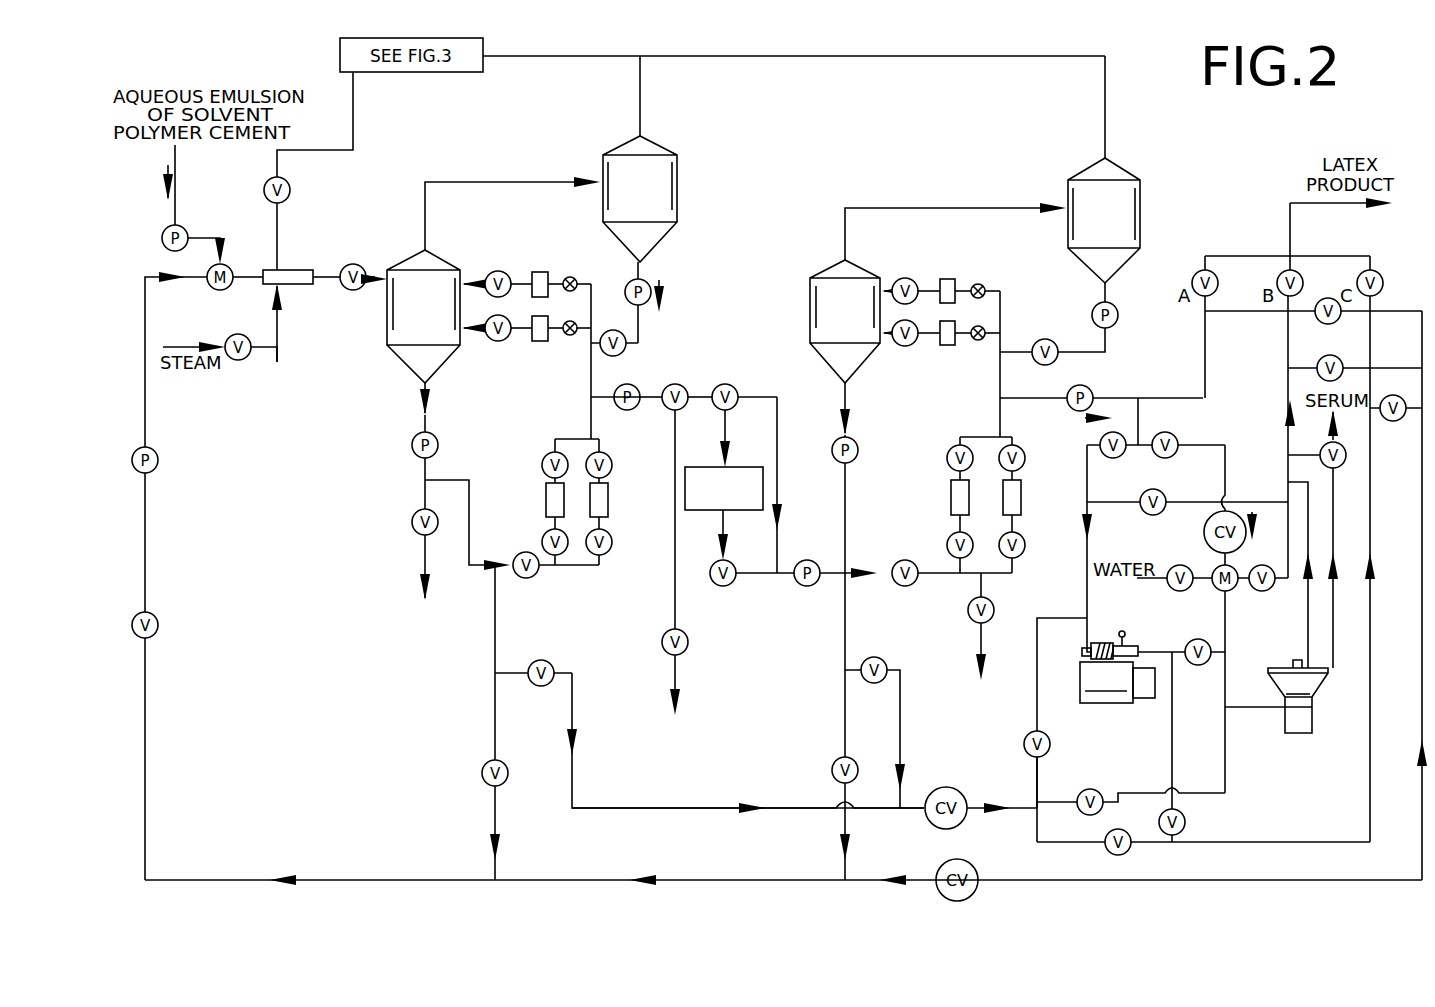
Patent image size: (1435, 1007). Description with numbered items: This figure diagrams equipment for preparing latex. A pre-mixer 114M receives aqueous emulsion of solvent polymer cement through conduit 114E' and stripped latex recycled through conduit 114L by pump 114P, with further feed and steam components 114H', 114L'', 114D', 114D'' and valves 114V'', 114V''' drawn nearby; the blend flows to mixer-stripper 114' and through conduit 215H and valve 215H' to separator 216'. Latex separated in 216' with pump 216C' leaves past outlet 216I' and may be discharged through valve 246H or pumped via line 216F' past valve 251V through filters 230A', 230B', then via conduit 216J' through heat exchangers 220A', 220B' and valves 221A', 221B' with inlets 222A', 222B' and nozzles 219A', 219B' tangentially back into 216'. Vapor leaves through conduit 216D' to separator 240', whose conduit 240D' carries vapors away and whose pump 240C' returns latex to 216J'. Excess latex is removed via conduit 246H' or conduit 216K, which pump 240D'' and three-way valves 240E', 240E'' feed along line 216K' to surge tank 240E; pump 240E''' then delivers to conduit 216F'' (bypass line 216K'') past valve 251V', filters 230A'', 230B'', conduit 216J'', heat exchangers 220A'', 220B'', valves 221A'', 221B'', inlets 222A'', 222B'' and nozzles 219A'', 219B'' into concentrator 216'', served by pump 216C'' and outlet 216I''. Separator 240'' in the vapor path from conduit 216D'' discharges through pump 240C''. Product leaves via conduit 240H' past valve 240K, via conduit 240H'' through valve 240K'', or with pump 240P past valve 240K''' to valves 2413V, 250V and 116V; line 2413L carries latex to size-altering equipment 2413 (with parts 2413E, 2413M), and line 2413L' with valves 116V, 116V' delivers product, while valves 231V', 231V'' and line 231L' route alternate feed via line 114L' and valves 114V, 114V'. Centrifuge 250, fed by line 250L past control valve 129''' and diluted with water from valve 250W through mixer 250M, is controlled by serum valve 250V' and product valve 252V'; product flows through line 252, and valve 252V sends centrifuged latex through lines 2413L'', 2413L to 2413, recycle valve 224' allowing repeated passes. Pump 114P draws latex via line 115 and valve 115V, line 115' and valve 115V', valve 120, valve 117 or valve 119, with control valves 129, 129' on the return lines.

The conduit 114L is at (178, 576).
The line 114L' is at (852, 476).
The valve 114L'' is at (308, 223).
The mixer-stripper 114' is at (301, 260).
The pump 114H' is at (201, 198).
The conduit 114E' is at (218, 235).
The pre-mixer 114M is at (232, 286).
The steam valve 114D' is at (268, 358).
The steam line 114D'' is at (195, 334).
The pump 114P is at (173, 453).
The valve 114V is at (552, 664).
The valve 114V' is at (895, 726).
The valve 114V'' is at (1203, 851).
The valve 114V''' is at (177, 616).
The line 115 is at (465, 722).
The line 115' is at (813, 671).
The valve 115V is at (465, 764).
The valve 115V' is at (807, 770).
The valve 116V is at (1200, 747).
The valve 116V' is at (1371, 534).
The valve 117 is at (1395, 421).
The valve 119 is at (1325, 356).
The valve 120 is at (1328, 298).
The control valve 129 is at (804, 814).
The control valve 129' is at (783, 874).
The control valve 129''' is at (1203, 538).
The conduit 215H is at (312, 323).
The valve 215H' is at (363, 263).
The separator 216' is at (394, 316).
The concentrator 216'' is at (830, 308).
The pump 216C' is at (396, 438).
The pump 216C'' is at (820, 442).
The vapor outlet conduit 216D' is at (512, 203).
The conduit 216D'' is at (955, 220).
The line 216F' is at (467, 536).
The conduit 216F'' is at (802, 576).
The outlet line 216I' is at (395, 393).
The outlet line 216I'' is at (816, 409).
The recycle conduit 216J' is at (616, 352).
The conduit 216J'' is at (1030, 364).
The conduit 216K is at (603, 418).
The line 216K' is at (728, 368).
The line 216K'' is at (806, 485).
The spray nozzle 219A' is at (589, 270).
The spray nozzle 219B' is at (564, 351).
The spray nozzle 219A'' is at (1001, 276).
The spray nozzle 219B'' is at (970, 364).
The heat exchanger 220A' is at (563, 261).
The heat exchanger 220B' is at (546, 359).
The heat exchanger 220A'' is at (968, 267).
The heat exchanger 220B'' is at (960, 349).
The valve 221A' is at (491, 251).
The valve 221B' is at (491, 359).
The valve 221A'' is at (918, 254).
The valve 221B'' is at (907, 366).
The inlet 222A' is at (473, 261).
The inlet 222B' is at (473, 352).
The inlet 222A'' is at (888, 265).
The inlet 222B'' is at (888, 359).
The recycle valve 224' is at (1266, 587).
The filter 230A' is at (526, 502).
The filter 230B' is at (625, 502).
The filter 230A'' is at (948, 505).
The filter 230B'' is at (1040, 505).
The valve 231V' is at (1006, 733).
The valve 231V'' is at (1132, 811).
The line 231L' is at (1022, 796).
The second collector 240' is at (658, 188).
The separator 240'' is at (1123, 205).
The pump 240C' is at (668, 292).
The pump 240C'' is at (1079, 298).
The conduit 240D' is at (678, 96).
The pump 240D'' is at (890, 233).
The surge tank 240E is at (721, 485).
The three-way valve 240E' is at (688, 361).
The three-way valve 240E'' is at (749, 382).
The pump 240E''' is at (817, 555).
The conduit 240H' is at (636, 519).
The conduit 240H'' is at (942, 651).
The valve 240K is at (641, 522).
The valve 240K'' is at (999, 469).
The valve 240K''' is at (1190, 312).
The pump 240P is at (1080, 385).
The valve 246H is at (391, 507).
The conduit 246H' is at (387, 567).
The centrifuge 250 is at (1298, 696).
The line 250L is at (1225, 450).
The mixer 250M is at (1229, 600).
The valve 250V is at (1188, 429).
The valve 250V' is at (1288, 553).
The valve 250W is at (1188, 591).
The valve 251V is at (541, 551).
The valve 251V' is at (949, 548).
The line 252 is at (1288, 338).
The valve 252V is at (1187, 487).
The latex product valve 252V' is at (1264, 277).
The size altering means 2413 is at (1106, 682).
The filter element 2413E is at (1087, 650).
The filter motor 2413M is at (1148, 700).
The line 2413L is at (1048, 693).
The line 2413L' is at (1254, 693).
The line 2413L'' is at (1120, 548).
The valve 2413V is at (1104, 437).